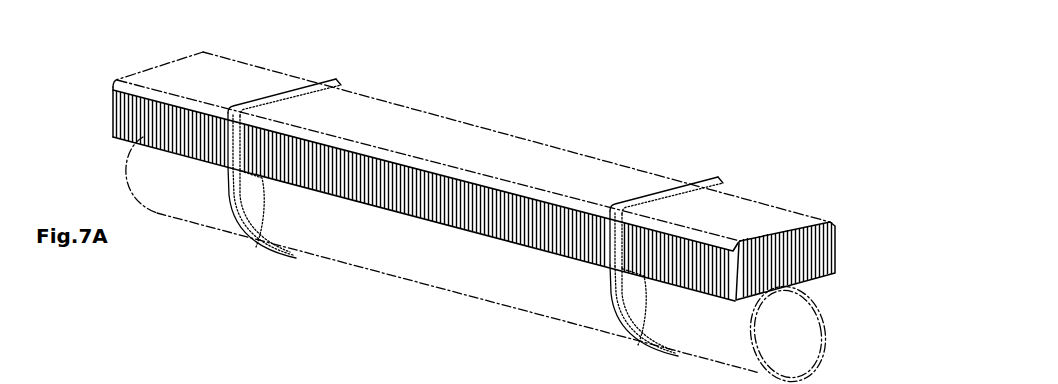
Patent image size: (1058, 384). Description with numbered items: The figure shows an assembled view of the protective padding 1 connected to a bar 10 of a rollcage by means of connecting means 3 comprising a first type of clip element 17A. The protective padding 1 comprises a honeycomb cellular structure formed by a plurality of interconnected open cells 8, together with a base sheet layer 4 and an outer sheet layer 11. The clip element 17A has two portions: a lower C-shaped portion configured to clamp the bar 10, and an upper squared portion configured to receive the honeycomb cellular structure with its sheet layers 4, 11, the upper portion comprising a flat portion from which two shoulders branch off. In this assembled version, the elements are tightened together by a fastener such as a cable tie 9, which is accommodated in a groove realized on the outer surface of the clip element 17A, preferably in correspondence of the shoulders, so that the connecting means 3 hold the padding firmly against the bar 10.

The protective padding 1 is at (447, 215).
The connecting means 3 is at (488, 183).
The base sheet layer 4 is at (407, 212).
The open cells 8 is at (150, 115).
The cable tie 9 is at (277, 95).
The bar 10 is at (192, 199).
The outer sheet layer 11 is at (425, 135).
The clip element 17A is at (252, 192).